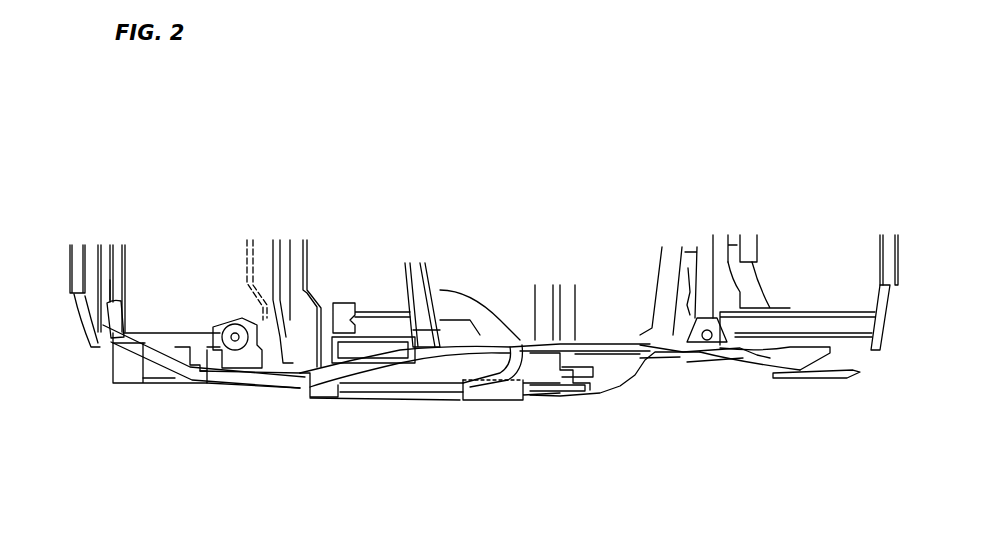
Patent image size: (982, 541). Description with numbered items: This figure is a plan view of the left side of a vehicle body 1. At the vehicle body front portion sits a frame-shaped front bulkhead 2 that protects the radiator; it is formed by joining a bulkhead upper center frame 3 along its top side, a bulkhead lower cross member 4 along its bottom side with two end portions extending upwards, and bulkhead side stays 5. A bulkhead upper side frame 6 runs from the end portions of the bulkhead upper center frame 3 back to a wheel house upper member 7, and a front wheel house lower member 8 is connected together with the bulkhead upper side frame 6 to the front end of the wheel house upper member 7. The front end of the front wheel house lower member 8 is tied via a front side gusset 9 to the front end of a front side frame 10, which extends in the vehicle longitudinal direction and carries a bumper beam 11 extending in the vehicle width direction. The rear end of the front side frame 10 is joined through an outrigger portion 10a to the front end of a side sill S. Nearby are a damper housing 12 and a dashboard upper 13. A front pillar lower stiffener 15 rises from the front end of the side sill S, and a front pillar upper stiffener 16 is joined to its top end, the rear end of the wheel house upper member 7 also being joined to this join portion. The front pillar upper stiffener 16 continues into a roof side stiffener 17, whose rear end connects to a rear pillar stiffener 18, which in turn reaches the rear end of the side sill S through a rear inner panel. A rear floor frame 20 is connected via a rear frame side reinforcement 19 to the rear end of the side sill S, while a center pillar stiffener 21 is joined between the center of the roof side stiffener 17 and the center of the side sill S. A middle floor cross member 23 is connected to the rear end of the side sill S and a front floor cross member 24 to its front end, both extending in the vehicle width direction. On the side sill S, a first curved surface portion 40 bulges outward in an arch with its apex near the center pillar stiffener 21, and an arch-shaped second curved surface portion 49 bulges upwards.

The vehicle body 1 is at (553, 180).
The front bulkhead 2 is at (127, 247).
The bulkhead upper center frame 3 is at (107, 262).
The bulkhead lower cross member 4 is at (110, 284).
The bulkhead side stay 5 is at (127, 324).
The bulkhead upper side frame 6 is at (167, 369).
The wheel house upper member 7 is at (250, 379).
The front wheel house lower member 8 is at (170, 381).
The front side gusset 9 is at (140, 366).
The front side frame 10 is at (176, 338).
The outrigger portion 10a is at (343, 394).
The bumper beam 11 is at (83, 309).
The damper housing 12 is at (253, 318).
The dashboard upper 13 is at (283, 250).
The front pillar lower stiffener 15 is at (323, 391).
The front pillar upper stiffener 16 is at (372, 369).
The roof side stiffener 17 is at (567, 342).
The rear pillar stiffener 18 is at (770, 363).
The rear frame side reinforcement 19 is at (625, 369).
The rear floor frame 20 is at (815, 327).
The center pillar stiffener 21 is at (515, 350).
The middle floor cross member 23 is at (545, 300).
The front floor cross member 24 is at (427, 366).
The first curved surface portion 40 is at (528, 393).
The second curved surface portion 49 is at (553, 393).
The side sill S is at (457, 405).